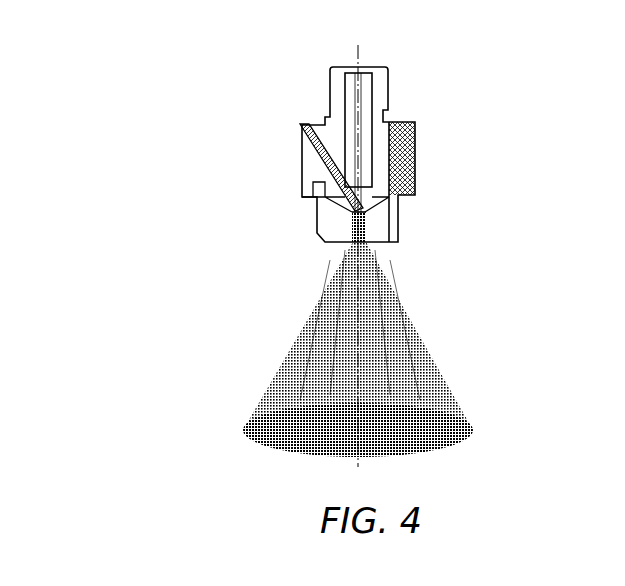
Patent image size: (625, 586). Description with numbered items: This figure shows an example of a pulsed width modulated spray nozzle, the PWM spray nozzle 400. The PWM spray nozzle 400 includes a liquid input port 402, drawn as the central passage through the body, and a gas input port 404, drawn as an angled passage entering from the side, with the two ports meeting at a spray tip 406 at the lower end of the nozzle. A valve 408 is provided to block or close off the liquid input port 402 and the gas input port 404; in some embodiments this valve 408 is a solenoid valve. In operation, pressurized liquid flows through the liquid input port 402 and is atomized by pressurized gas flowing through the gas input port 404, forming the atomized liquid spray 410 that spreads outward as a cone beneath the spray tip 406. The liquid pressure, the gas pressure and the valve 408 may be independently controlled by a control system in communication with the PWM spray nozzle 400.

The PWM spray nozzle 400 is at (266, 169).
The liquid input port 402 is at (359, 112).
The gas input port 404 is at (303, 124).
The spray tip 406 is at (357, 240).
The valve 408 is at (356, 216).
The atomized liquid spray 410 is at (461, 360).